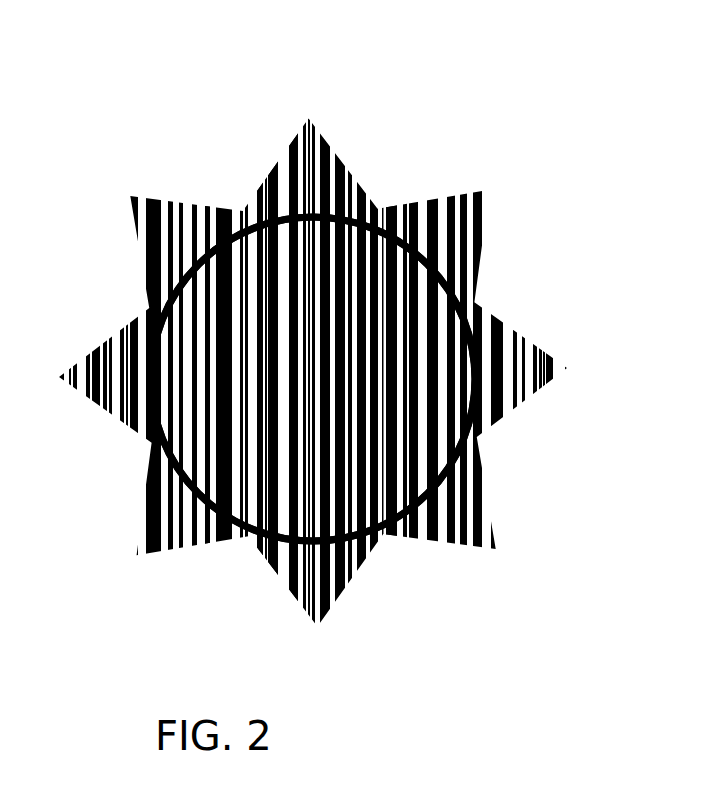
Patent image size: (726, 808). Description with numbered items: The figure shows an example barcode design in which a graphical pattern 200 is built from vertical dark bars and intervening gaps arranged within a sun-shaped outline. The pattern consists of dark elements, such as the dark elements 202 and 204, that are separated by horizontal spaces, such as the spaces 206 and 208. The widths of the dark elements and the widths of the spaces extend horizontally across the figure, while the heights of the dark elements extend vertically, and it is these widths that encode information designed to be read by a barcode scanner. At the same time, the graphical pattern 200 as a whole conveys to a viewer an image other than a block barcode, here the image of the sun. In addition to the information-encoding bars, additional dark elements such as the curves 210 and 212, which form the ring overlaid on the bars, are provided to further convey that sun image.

The graphical pattern 200 is at (431, 110).
The dark element 202 is at (291, 148).
The dark element 204 is at (268, 179).
The space 206 is at (213, 537).
The space 208 is at (264, 558).
The curve 210 is at (384, 219).
The curve 212 is at (388, 531).